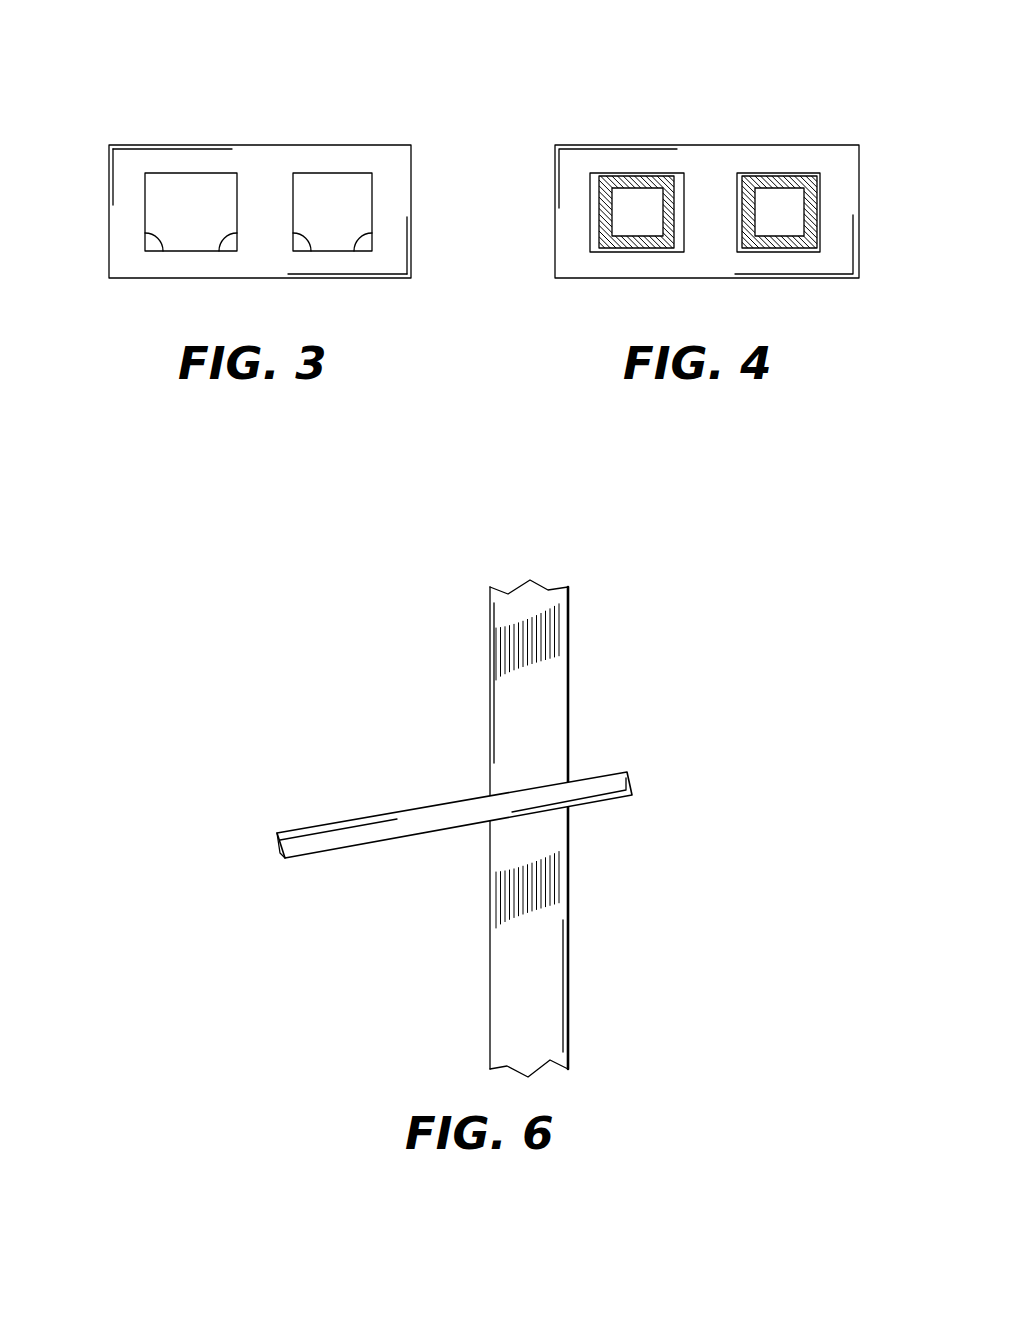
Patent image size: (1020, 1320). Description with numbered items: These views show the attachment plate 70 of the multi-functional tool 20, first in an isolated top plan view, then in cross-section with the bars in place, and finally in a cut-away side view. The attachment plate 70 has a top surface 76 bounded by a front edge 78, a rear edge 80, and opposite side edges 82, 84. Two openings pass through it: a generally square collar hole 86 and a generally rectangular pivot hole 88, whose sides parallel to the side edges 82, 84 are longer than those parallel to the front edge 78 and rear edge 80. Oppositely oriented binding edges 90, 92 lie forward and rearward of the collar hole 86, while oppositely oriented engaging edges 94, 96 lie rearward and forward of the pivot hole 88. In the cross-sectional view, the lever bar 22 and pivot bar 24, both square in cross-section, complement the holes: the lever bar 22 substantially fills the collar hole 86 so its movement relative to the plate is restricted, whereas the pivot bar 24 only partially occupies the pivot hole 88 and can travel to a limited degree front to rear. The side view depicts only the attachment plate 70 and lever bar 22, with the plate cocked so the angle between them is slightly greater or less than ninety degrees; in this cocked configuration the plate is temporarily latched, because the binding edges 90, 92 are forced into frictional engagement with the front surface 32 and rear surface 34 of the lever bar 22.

In FIG. 6, the tool 20 is at (698, 707).
In FIG. 4, the lever bar 22 is at (788, 190).
In FIG. 6, the lever bar 22 is at (535, 828).
In FIG. 4, the pivot bar 24 is at (623, 190).
In FIG. 6, the front surface 32 is at (570, 640).
In FIG. 6, the rear surface 34 is at (490, 930).
In FIG. 3, the attachment plate 70 is at (442, 150).
In FIG. 4, the attachment plate 70 is at (702, 140).
In FIG. 6, the attachment plate 70 is at (602, 803).
In FIG. 3, the top surface 76 is at (281, 225).
In FIG. 4, the top surface 76 is at (730, 228).
In FIG. 3, the front edge 78 is at (411, 203).
In FIG. 4, the front edge 78 is at (860, 203).
In FIG. 3, the rear edge 80 is at (109, 217).
In FIG. 4, the rear edge 80 is at (555, 203).
In FIG. 3, the side edge 82 is at (262, 278).
In FIG. 3, the side edge 84 is at (262, 145).
In FIG. 3, the collar hole 86 is at (332, 197).
In FIG. 4, the collar hole 86 is at (763, 206).
In FIG. 3, the pivot hole 88 is at (190, 195).
In FIG. 4, the pivot hole 88 is at (653, 206).
In FIG. 3, the binding edge 90 is at (354, 251).
In FIG. 3, the binding edge 92 is at (311, 251).
In FIG. 3, the engaging edge 94 is at (163, 251).
In FIG. 3, the engaging edge 96 is at (219, 251).